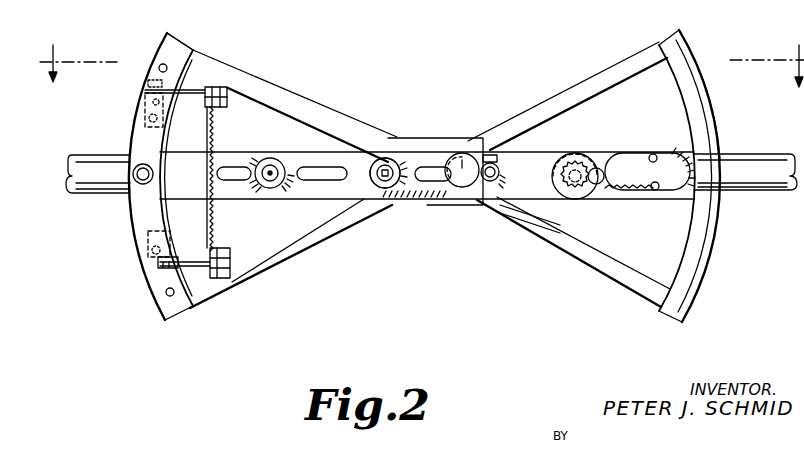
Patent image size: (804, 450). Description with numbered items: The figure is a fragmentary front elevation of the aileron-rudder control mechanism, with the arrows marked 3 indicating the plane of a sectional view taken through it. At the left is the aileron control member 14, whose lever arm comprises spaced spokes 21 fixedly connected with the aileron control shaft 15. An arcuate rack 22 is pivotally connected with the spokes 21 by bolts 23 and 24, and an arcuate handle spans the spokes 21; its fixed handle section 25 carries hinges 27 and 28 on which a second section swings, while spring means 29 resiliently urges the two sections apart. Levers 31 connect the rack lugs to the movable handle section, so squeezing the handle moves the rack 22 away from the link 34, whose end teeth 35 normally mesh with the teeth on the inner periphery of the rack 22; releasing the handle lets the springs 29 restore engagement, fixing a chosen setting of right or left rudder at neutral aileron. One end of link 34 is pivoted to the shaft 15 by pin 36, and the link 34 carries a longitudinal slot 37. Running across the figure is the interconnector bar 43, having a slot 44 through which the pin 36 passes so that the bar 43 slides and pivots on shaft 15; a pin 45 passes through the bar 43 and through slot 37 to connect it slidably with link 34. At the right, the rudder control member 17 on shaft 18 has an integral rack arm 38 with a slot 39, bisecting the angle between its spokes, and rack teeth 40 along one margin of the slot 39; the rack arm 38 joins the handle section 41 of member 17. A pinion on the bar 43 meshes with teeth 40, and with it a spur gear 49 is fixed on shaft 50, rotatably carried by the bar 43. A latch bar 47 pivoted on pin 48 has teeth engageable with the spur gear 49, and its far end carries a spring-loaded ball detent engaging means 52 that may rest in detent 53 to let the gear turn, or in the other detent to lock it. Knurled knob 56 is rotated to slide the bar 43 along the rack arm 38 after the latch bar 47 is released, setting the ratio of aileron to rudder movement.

The section line 3- 3 is at (419, 64).
The aileron control member 14 is at (144, 304).
The aileron control shaft 15 is at (396, 152).
The rudder control member 17 is at (722, 281).
The shaft 18 is at (470, 140).
The spokes 21 is at (286, 90).
The arcuate rack 22 is at (218, 135).
The bolt 23 is at (226, 84).
The bolt 24 is at (226, 290).
The handle section 25 is at (142, 218).
The hinge 27 is at (135, 106).
The hinge 28 is at (150, 250).
The spring means 29 is at (130, 195).
The levers 31 is at (190, 48).
The link 34 is at (235, 153).
The teeth 35 is at (218, 183).
The pin 36 is at (373, 205).
The slot 37 is at (245, 180).
The rack arm 38 is at (633, 190).
The slot 39 is at (653, 155).
The rack teeth 40 is at (657, 190).
The handle section 41 is at (690, 70).
The interconnector bar 43 is at (430, 187).
The slot 44 is at (333, 180).
The pin 45 is at (278, 160).
The latch bar 47 is at (527, 150).
The pin 48 is at (623, 152).
The spur gear 49 is at (582, 150).
The shaft 50 is at (564, 203).
The ball detent engaging means 52 is at (498, 205).
The detent 53 is at (493, 150).
The knurled knob 56 is at (565, 200).